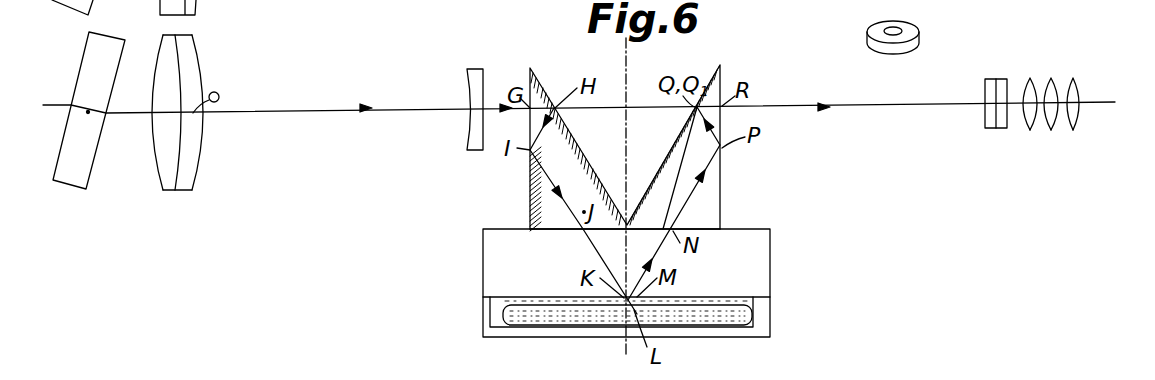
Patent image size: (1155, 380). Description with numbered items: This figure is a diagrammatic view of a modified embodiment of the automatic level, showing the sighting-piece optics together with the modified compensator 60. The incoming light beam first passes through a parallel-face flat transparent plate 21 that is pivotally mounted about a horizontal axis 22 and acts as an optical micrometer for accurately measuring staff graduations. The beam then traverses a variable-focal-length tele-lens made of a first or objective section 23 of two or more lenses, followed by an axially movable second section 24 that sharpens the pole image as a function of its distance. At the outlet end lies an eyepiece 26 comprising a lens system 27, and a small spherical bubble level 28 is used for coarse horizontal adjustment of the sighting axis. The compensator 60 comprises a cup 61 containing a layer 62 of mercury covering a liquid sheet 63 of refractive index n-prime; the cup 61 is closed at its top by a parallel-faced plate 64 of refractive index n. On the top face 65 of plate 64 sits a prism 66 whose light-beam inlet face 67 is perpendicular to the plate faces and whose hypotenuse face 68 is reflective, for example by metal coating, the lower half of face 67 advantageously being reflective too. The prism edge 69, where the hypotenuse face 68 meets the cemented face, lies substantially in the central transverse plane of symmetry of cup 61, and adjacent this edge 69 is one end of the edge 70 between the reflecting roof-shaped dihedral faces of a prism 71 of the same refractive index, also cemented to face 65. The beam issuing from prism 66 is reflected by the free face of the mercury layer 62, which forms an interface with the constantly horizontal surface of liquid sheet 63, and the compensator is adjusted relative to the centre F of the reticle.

The parallel-face flat transparent plate 21 is at (73, 173).
The horizontal axis 22 is at (88, 112).
The first or objective section 23 is at (185, 182).
The second section 24 is at (472, 146).
The eyepiece 26 is at (1041, 70).
The lens system 27 is at (1073, 132).
The spherical bubble level 28 is at (910, 32).
The compensator 60 is at (657, 284).
The cup 61 is at (755, 315).
The layer of mercury 62 is at (733, 322).
The liquid sheet 63 is at (683, 300).
The parallel-faced plate 64 is at (760, 274).
The top face 65 is at (740, 228).
The prism 66 is at (577, 172).
The light-beam inlet face 67 is at (530, 208).
The hypotenuse face 68 is at (572, 133).
The prism edge 69 is at (634, 190).
The edge 70 is at (684, 127).
The prism 71 is at (682, 149).
The centre of reticle F is at (994, 106).